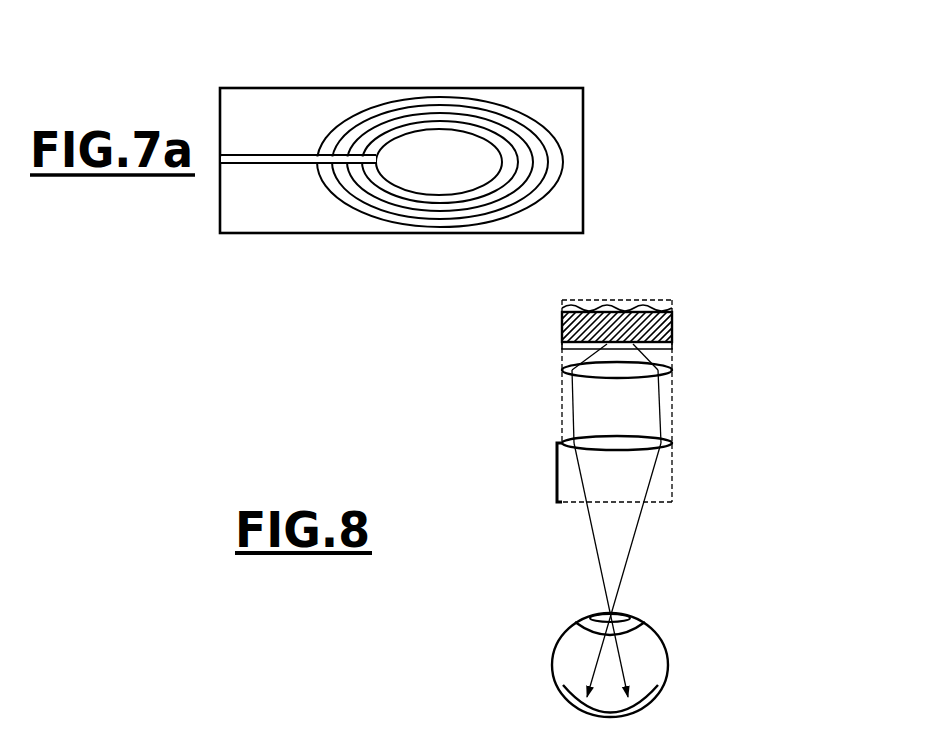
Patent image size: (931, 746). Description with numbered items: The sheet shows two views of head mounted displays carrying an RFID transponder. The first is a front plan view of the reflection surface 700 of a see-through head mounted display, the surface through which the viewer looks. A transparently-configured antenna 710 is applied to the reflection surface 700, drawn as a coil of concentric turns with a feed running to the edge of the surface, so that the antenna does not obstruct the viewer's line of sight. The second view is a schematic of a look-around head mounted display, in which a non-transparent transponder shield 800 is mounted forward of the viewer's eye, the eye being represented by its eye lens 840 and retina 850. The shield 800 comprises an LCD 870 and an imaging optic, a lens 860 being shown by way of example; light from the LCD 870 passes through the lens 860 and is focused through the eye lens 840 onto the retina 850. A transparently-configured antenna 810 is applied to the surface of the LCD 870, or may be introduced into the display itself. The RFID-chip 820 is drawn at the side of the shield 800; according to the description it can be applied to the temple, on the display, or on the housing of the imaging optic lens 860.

In FIG. 7a, the reflection surface 700 is at (267, 237).
In FIG. 7a, the transparently-configured antenna 710 is at (392, 95).
In FIG. 8, the transponder shield 800 is at (685, 485).
In FIG. 8, the transparently-configured antenna 810 is at (623, 288).
In FIG. 8, the RFID-chip 820 is at (555, 470).
In FIG. 8, the eye lens 840 is at (577, 617).
In FIG. 8, the retina 850 is at (564, 705).
In FIG. 8, the lens 860 is at (674, 370).
In FIG. 8, the LCD 870 is at (561, 327).